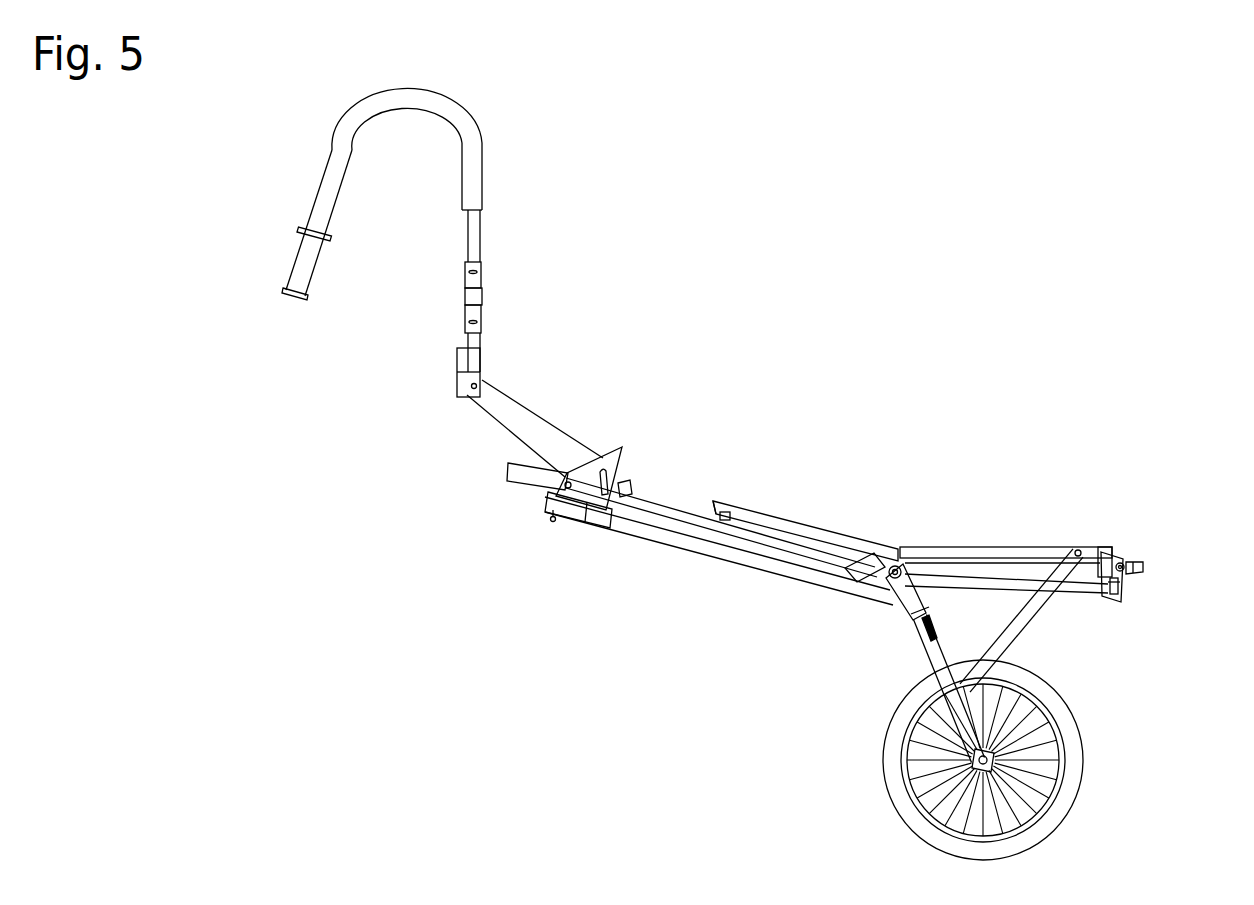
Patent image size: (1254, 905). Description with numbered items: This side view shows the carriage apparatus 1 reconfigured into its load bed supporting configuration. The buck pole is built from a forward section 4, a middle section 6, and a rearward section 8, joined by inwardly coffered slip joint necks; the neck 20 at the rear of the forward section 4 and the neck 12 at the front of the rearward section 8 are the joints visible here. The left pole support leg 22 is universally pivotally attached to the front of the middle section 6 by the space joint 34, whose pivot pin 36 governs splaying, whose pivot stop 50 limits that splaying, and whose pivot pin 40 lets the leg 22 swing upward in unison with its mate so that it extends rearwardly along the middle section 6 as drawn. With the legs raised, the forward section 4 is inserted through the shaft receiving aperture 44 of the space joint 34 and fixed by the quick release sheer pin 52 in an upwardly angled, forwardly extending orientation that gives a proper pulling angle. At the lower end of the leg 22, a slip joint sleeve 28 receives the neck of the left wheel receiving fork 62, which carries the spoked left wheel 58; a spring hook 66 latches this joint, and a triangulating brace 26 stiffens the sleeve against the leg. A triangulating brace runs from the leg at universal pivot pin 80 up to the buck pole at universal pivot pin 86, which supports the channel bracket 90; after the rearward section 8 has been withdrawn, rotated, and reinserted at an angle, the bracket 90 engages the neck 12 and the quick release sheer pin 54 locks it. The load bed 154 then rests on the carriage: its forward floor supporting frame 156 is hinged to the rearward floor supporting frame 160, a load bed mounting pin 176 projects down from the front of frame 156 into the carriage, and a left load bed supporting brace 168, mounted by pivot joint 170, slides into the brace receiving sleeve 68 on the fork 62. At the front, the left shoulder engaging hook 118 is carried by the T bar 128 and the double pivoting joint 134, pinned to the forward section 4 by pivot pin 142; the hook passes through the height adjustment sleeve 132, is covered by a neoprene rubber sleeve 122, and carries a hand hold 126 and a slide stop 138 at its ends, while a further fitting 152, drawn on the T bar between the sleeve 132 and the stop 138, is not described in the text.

The stroller/jogger assembly 1 is at (810, 375).
The forward section 4 is at (518, 413).
The middle section 6 is at (703, 505).
The rearward section 8 is at (1018, 570).
The slip joint neck 12 is at (1105, 565).
The slip joint neck 20 is at (667, 512).
The left pole support leg 22 is at (720, 550).
The left triangulating brace 26 is at (860, 555).
The slip joint sleeve 28 is at (905, 625).
The space joint 34 is at (633, 438).
The pivot pin 36 is at (552, 522).
The pivot pin 40 is at (565, 478).
The shaft receiving aperture 44 is at (587, 463).
The pivot stop 50 is at (590, 540).
The quick release sheer pin 52 is at (633, 487).
The quick release sheer pin 54 is at (1130, 564).
The left wheel 58 is at (895, 750).
The left wheel receiving fork 62 is at (920, 660).
The left spring hook 66 is at (935, 612).
The brace receiving sleeve 68 is at (1000, 745).
The universal pivot pin 80 is at (885, 585).
The universal pivot pin 86 is at (1118, 596).
The channel bracket 90 is at (1127, 584).
The left shoulder engaging hook 118 is at (470, 222).
The neoprene rubber sleeve 122 is at (450, 116).
The left hand hold 126 is at (297, 272).
The T bar 128 is at (465, 292).
The left height adjustment sleeve 132 is at (465, 264).
The double pivoting joint 134 is at (462, 380).
The left slide stop 138 is at (465, 354).
The pivot pin 142 is at (466, 388).
The lower collar 152 is at (466, 322).
The load bed 154 is at (950, 520).
The forward floor supporting frame 156 is at (803, 528).
The rearward floor supporting frame 160 is at (985, 552).
The left load bed supporting brace 168 is at (1010, 660).
The pivot joint 170 is at (1100, 567).
The load bed mounting pin 176 is at (730, 513).